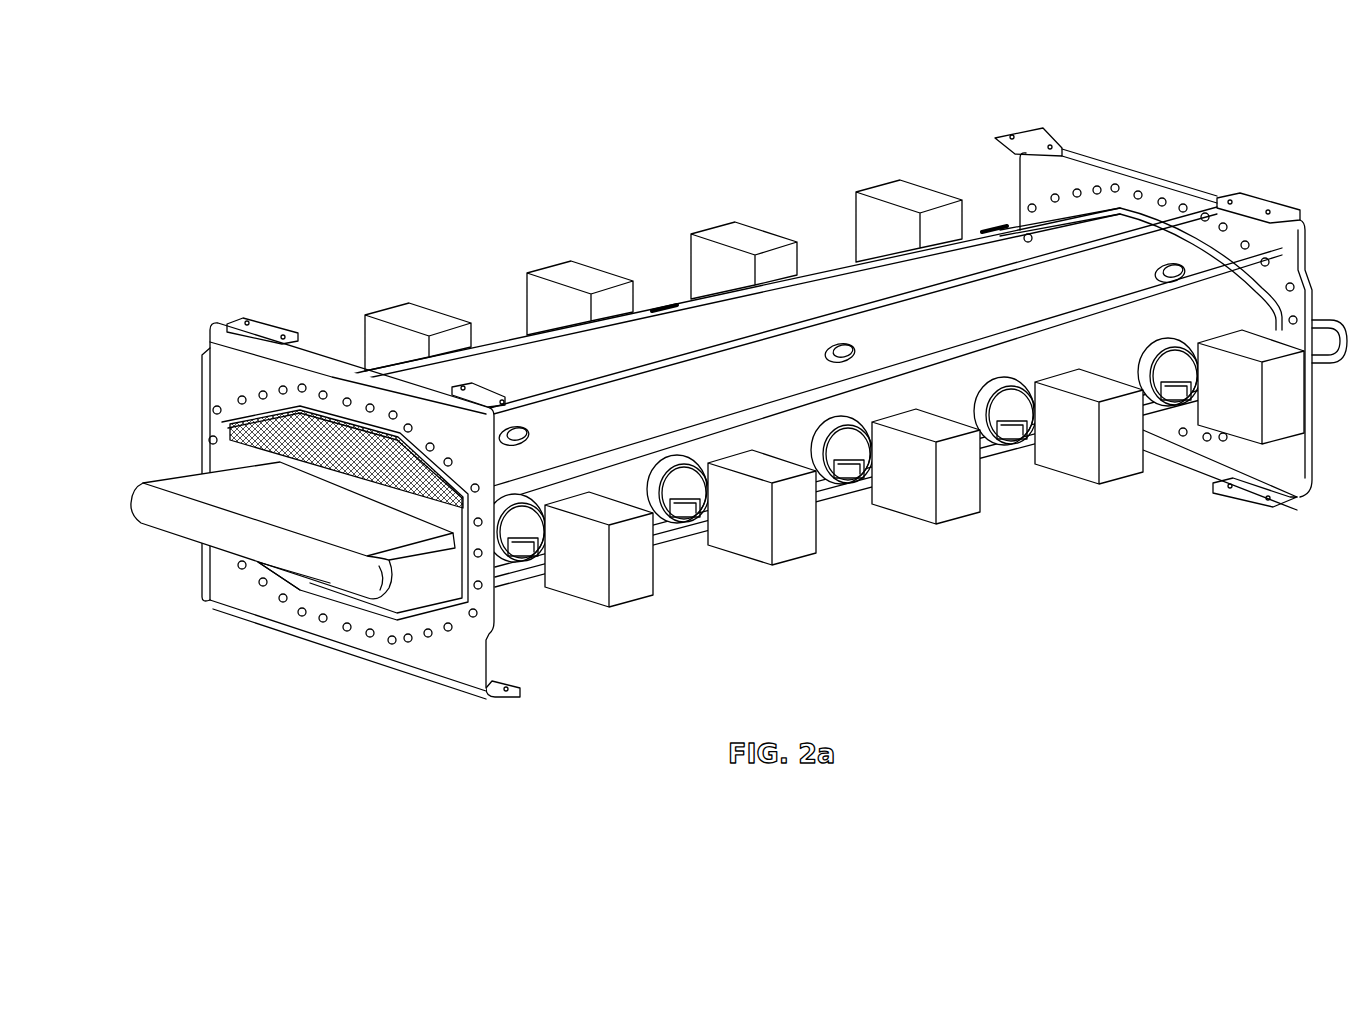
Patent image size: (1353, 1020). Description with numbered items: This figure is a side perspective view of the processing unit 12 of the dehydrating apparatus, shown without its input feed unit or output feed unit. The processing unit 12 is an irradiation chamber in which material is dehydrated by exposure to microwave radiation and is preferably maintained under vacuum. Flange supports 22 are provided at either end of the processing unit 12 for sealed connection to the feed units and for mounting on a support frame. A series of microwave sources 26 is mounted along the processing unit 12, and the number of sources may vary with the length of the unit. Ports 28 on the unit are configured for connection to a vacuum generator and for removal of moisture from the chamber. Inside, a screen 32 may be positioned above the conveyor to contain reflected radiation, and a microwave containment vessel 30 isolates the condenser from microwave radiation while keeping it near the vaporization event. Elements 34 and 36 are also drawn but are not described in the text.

The processing unit 12 is at (717, 412).
The flange supports 22 is at (518, 694).
The microwave source 26 is at (637, 585).
The port 28 is at (858, 353).
The microwave containment vessel 30 is at (288, 473).
The screen 32 is at (318, 476).
The second airflow 34 is at (450, 528).
The mesh screen 36 is at (240, 460).